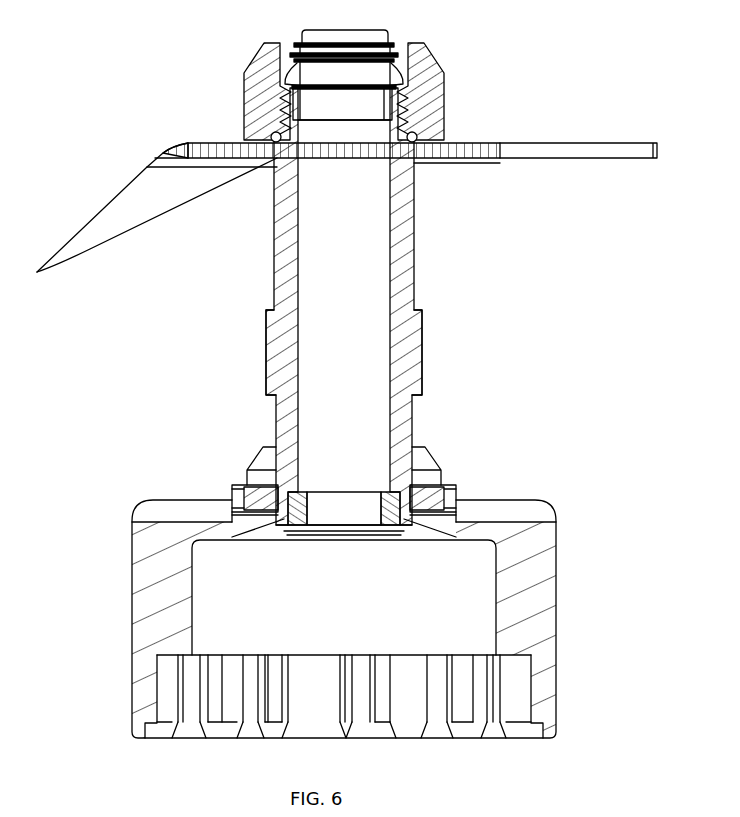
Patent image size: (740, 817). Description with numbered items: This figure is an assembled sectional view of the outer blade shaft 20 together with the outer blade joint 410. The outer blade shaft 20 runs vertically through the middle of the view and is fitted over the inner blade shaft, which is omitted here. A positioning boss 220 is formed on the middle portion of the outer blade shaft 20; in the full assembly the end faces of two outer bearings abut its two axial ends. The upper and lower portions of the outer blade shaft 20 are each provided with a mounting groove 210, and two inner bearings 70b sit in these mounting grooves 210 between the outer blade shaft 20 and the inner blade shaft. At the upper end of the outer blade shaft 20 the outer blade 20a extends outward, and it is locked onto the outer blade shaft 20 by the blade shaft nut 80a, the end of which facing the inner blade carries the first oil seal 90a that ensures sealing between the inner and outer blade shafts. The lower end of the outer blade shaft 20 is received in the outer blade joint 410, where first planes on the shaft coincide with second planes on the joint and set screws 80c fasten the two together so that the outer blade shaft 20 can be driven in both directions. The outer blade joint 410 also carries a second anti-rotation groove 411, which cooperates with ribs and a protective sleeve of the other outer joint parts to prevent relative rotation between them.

The outer blade shaft 20 is at (405, 287).
The outer blade 20a is at (165, 188).
The positioning boss 220 is at (277, 348).
The mounting groove 210 is at (243, 121).
The inner bearing 70b is at (273, 458).
The blade shaft nut 80a is at (430, 87).
The set screw 80c is at (446, 486).
The first oil seal 90a is at (403, 86).
The outer blade joint 410 is at (520, 596).
The second anti-rotation groove 411 is at (230, 698).